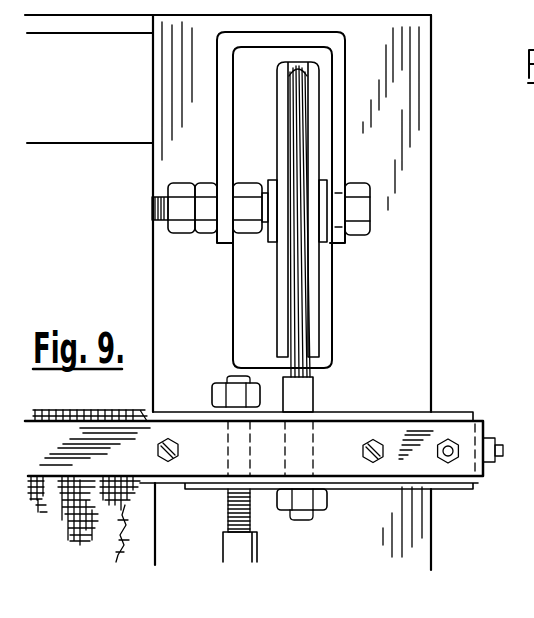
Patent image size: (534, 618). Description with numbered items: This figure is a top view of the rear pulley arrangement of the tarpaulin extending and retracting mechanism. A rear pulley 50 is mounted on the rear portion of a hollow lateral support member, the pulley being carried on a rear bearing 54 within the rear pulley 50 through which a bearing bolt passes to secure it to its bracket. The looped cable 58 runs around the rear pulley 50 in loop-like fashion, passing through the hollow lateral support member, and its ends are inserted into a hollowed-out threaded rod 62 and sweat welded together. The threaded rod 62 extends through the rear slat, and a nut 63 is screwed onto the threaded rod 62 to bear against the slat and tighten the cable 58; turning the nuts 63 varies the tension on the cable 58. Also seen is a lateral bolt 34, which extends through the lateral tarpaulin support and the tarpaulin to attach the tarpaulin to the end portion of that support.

The lateral bolt 34 is at (492, 464).
The rear pulley 50 is at (318, 316).
The rear bearing 54 is at (345, 78).
The looped cable 58 is at (290, 330).
The threaded rod 62 is at (314, 397).
The nut 63 is at (213, 390).